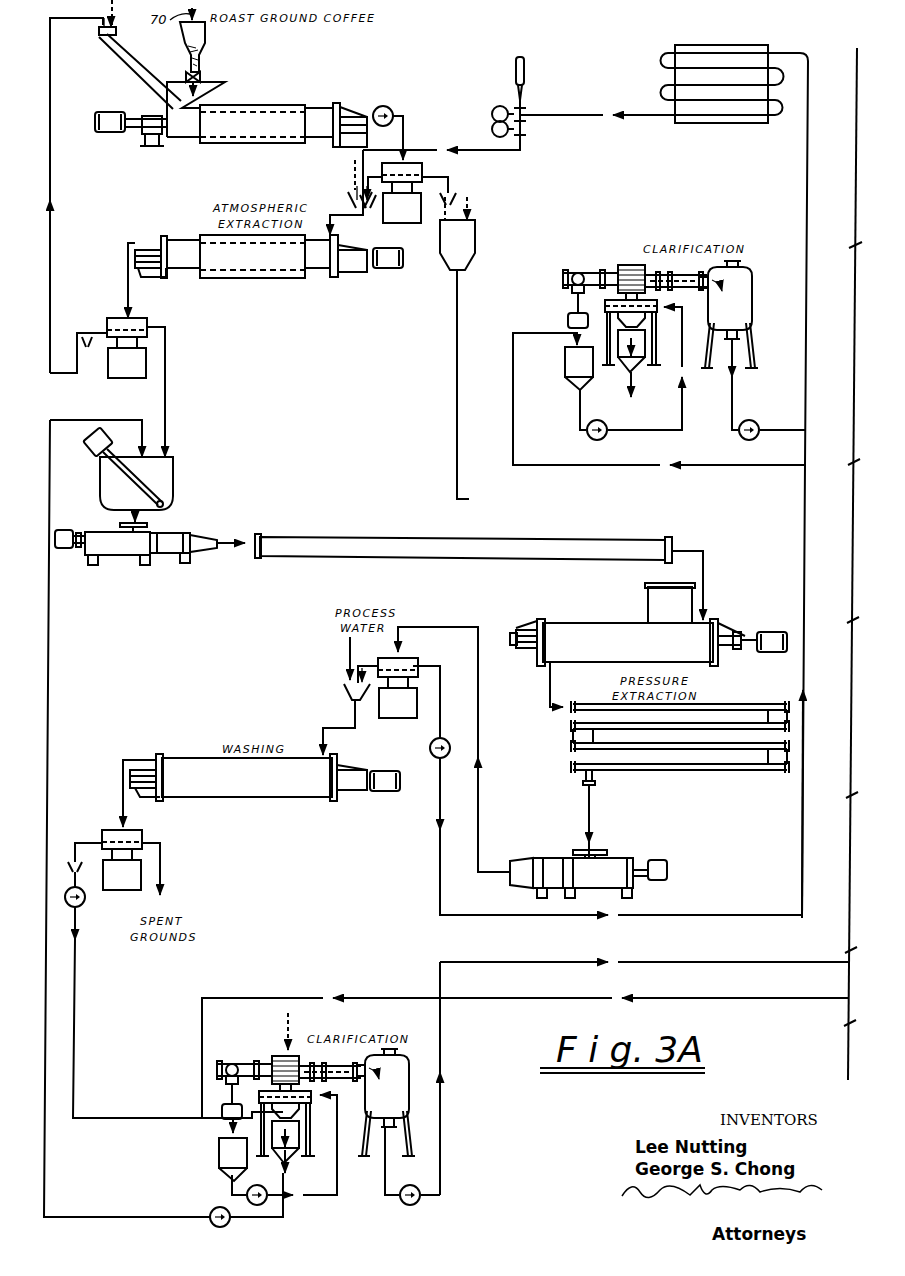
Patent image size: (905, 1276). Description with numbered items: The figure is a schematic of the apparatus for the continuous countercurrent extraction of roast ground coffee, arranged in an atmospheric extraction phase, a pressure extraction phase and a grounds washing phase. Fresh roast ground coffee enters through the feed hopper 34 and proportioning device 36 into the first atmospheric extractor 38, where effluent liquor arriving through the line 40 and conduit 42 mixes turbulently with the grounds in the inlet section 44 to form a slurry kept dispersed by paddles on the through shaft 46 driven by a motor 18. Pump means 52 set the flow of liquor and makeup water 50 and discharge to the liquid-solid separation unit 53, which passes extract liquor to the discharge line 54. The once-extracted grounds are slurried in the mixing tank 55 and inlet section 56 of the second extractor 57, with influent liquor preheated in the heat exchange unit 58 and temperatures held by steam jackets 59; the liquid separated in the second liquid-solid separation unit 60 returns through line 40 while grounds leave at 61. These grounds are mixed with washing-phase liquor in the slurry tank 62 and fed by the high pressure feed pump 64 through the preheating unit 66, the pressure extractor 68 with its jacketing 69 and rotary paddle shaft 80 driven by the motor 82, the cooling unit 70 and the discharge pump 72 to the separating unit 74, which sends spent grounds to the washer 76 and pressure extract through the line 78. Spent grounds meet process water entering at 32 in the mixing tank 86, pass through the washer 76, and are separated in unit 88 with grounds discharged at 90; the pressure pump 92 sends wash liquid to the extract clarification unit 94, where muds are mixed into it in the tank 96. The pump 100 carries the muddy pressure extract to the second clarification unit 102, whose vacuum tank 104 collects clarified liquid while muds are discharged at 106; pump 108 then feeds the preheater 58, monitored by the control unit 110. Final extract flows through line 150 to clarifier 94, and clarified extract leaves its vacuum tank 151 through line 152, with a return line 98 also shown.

The drive motor 18 is at (112, 133).
The process water inlet 32 is at (352, 646).
The feed hopper 34 is at (205, 38).
The proportioning device 36 is at (201, 76).
The first atmospheric extractor 38 is at (318, 108).
The line 40 is at (52, 263).
The conduit 42 is at (132, 63).
The inlet section 44 is at (186, 140).
The through shaft 46 is at (352, 120).
The makeup water 50 is at (118, 22).
The pump means 52 is at (391, 112).
The liquid-solid separation unit 53 is at (422, 168).
The discharge line 54 is at (455, 312).
The mixing tank 55 is at (345, 196).
The inlet section 56 is at (318, 272).
The second extractor 57 is at (185, 236).
The heat exchange unit 58 is at (716, 45).
The steam jackets 59 is at (236, 145).
The second liquid-solid separation unit 60 is at (107, 318).
The grounds discharge 61 is at (167, 392).
The slurry tank 62 is at (174, 490).
The high pressure feed pump 64 is at (125, 558).
The preheating unit 66 is at (450, 558).
The pressure extractor 68 is at (610, 623).
The steam jacketing 69 is at (550, 628).
The cooling unit 70 is at (713, 778).
The discharge pump 72 is at (622, 856).
The liquid-solid separating unit 74 is at (420, 660).
The washer 76 is at (232, 800).
The line 78 is at (438, 896).
The rotary paddle shaft 80 is at (530, 650).
The motor 82 is at (766, 632).
The mixing tank 86 is at (342, 692).
The separation unit 88 is at (142, 832).
The spent grounds discharge 90 is at (162, 873).
The pressure pump 92 is at (84, 908).
The extract clarification unit 94 is at (280, 1058).
The tank 96 is at (290, 1160).
The return line 98 is at (46, 1188).
The pump 100 is at (430, 748).
The second clarification unit 102 is at (625, 265).
The vacuum tank 104 is at (752, 308).
The muds discharge 106 is at (634, 388).
The pump 108 is at (754, 420).
The control unit 110 is at (512, 92).
The line 150 is at (773, 999).
The vacuum tank 151 is at (405, 1095).
The line 152 is at (442, 1122).